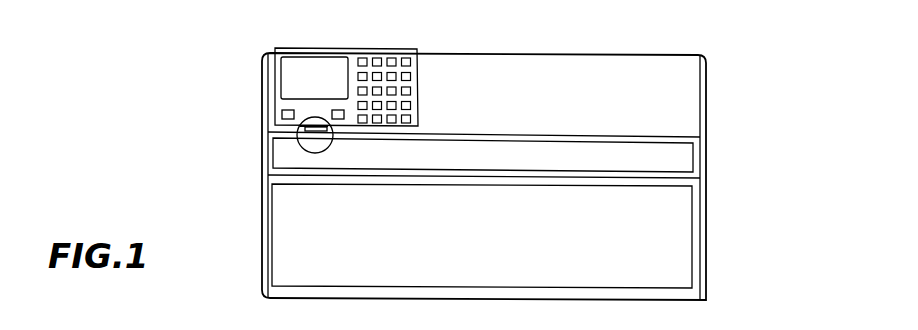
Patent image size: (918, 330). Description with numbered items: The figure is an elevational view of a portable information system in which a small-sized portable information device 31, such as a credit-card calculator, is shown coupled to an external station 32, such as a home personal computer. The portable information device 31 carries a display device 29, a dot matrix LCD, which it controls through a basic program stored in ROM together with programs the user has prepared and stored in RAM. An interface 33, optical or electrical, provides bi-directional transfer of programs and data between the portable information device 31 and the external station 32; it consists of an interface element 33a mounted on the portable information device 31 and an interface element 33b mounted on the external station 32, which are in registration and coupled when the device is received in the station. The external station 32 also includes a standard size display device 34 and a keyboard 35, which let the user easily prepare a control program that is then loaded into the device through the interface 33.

The display device 29 is at (312, 70).
The portable information device 31 is at (278, 68).
The external station 32 is at (724, 156).
The interface 33 is at (300, 147).
The interface element 33a is at (300, 126).
The interface element 33b is at (303, 132).
The standard size display device 34 is at (508, 166).
The keyboard 35 is at (500, 247).